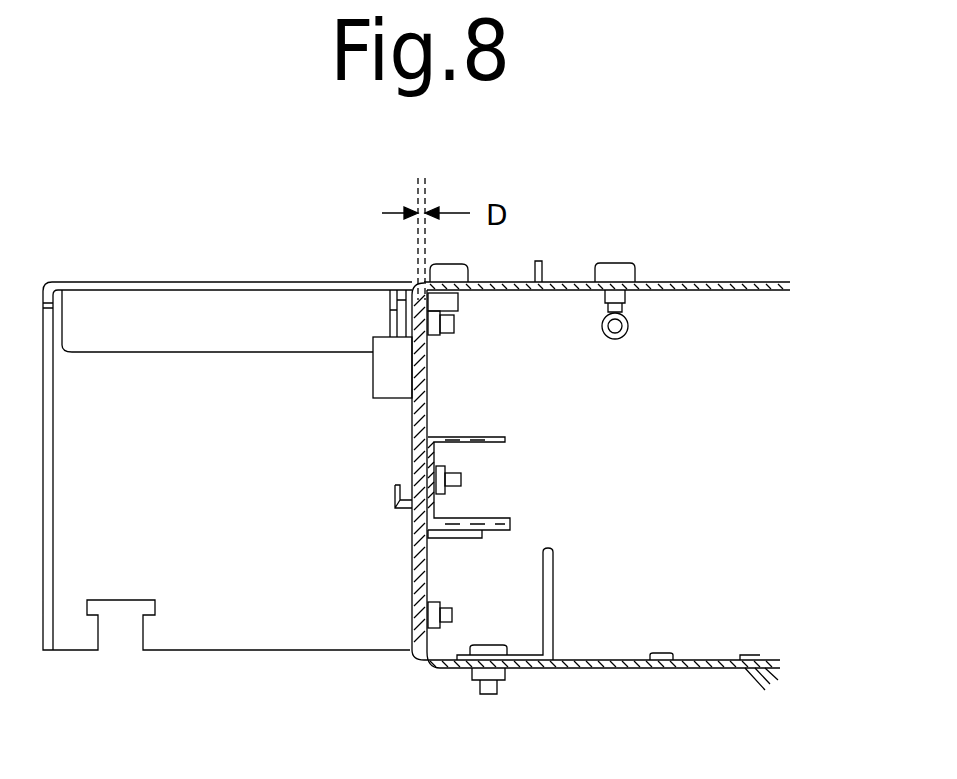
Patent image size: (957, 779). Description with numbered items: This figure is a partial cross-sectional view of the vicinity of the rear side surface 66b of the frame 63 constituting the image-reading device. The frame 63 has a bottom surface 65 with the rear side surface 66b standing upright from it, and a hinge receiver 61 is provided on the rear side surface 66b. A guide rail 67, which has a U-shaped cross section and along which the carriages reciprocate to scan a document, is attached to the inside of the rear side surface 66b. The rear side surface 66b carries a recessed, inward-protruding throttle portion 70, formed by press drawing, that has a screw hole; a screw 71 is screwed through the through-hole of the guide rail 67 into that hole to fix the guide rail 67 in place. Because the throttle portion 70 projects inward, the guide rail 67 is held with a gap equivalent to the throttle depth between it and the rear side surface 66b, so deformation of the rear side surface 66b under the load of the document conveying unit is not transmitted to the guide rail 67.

The hinge receiver 61 is at (240, 622).
The frame 63 is at (704, 256).
The bottom surface 65 is at (698, 668).
The rear side surface 66b is at (430, 470).
The guide rail 67 is at (480, 430).
The throttle portion 70 is at (406, 492).
The screw 71 is at (463, 479).